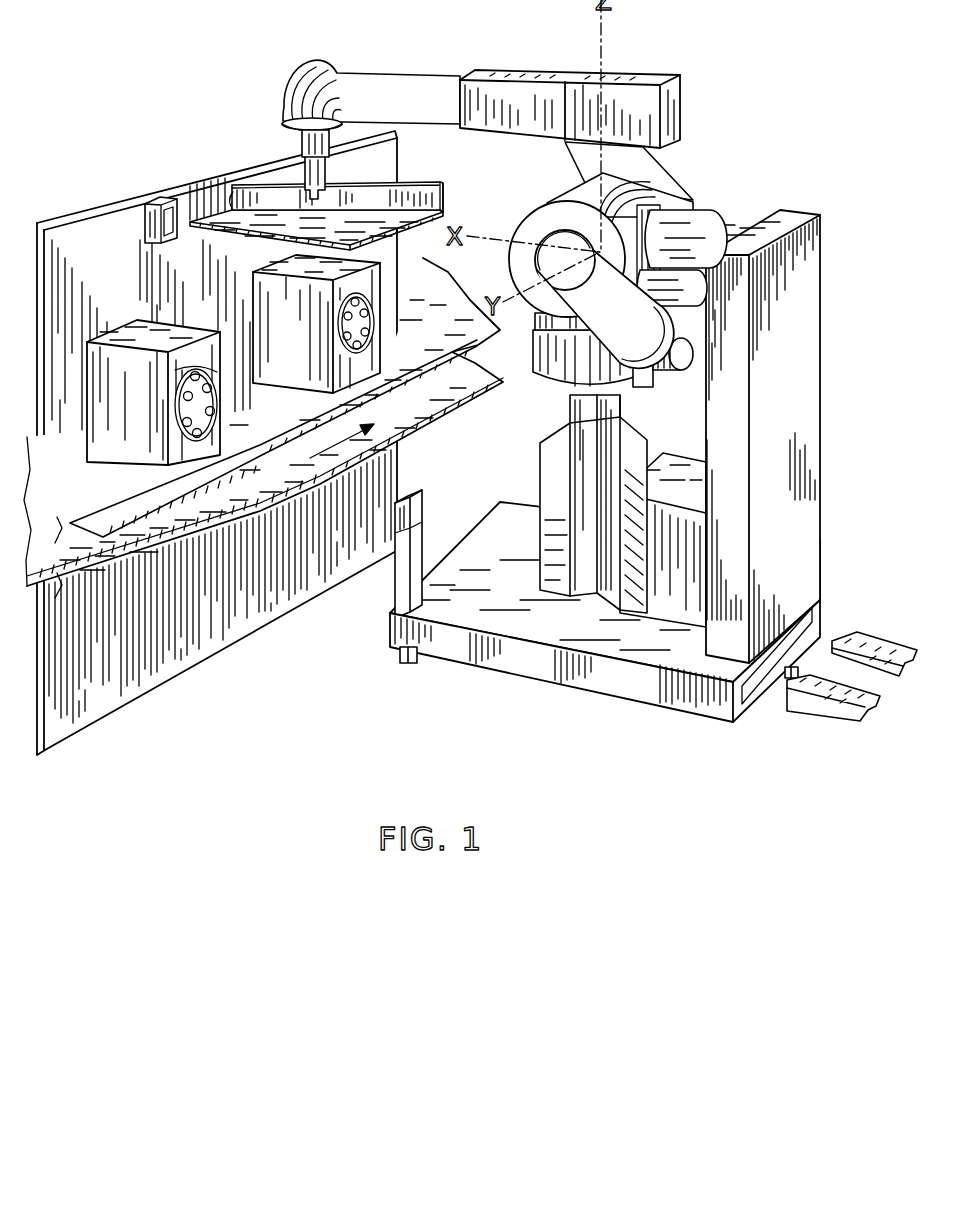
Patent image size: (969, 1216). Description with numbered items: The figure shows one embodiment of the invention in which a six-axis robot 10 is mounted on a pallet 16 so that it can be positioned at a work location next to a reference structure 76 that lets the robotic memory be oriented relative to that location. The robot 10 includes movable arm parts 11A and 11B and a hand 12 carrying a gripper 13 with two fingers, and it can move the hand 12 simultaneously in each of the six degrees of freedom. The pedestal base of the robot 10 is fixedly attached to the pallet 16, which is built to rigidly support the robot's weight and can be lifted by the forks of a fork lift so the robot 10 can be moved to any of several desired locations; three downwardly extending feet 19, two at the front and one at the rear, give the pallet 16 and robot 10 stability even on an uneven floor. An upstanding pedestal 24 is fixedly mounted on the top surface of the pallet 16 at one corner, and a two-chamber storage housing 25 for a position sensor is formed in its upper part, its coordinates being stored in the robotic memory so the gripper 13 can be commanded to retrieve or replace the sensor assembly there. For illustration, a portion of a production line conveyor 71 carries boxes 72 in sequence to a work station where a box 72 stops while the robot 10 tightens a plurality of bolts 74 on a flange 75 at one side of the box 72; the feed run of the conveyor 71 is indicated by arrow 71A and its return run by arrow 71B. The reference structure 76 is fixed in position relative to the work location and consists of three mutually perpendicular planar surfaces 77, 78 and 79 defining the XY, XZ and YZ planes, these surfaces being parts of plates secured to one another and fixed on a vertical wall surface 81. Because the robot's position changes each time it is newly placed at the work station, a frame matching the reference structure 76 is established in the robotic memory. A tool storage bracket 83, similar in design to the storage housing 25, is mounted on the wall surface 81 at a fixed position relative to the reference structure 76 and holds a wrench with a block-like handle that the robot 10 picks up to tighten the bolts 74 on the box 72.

The 6-axis robot 10 is at (688, 183).
The movable arm part 11A is at (530, 72).
The movable arm part 11B is at (677, 163).
The hand 12 is at (300, 148).
The gripper 13 is at (295, 163).
The pallet 16 is at (517, 676).
The feet 19 is at (397, 660).
The pedestal 24 is at (393, 565).
The storage housing 25 is at (393, 516).
The production line conveyor 71 is at (32, 468).
The feed run arrow 71A is at (133, 478).
The return run arrow 71B is at (349, 438).
The box 72 is at (257, 360).
The bolts 74 is at (214, 404).
The flange 75 is at (207, 362).
The reference structure 76 is at (446, 203).
The planar surface 77 is at (248, 232).
The planar surface 78 is at (423, 184).
The planar surface 79 is at (314, 219).
The vertical wall surface 81 is at (78, 231).
The tool storage bracket 83 is at (160, 199).